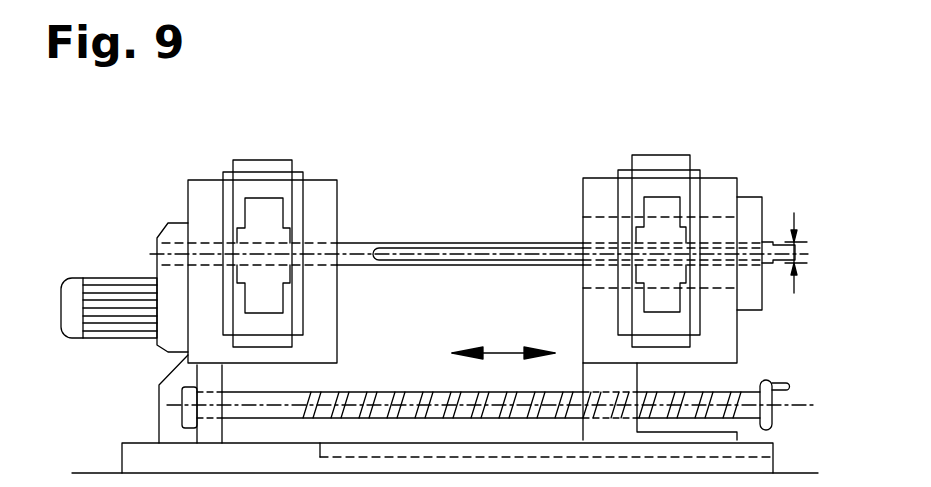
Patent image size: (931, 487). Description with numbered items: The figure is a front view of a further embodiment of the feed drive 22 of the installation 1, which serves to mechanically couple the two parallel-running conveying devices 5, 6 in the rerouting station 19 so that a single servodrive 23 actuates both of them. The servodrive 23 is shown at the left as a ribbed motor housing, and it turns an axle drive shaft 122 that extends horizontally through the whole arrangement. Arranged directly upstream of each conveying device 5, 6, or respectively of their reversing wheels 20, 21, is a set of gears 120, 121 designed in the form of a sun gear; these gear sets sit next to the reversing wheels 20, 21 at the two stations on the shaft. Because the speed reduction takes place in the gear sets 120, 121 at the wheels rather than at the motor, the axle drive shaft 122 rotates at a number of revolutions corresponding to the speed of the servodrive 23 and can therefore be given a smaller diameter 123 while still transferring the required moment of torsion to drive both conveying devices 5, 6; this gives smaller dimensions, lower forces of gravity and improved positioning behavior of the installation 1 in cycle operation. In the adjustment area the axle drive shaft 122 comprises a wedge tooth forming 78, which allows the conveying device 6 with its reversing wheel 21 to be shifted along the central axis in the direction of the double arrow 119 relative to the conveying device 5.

The installation 1 is at (560, 100).
The conveying device 5 is at (267, 136).
The conveying device 6 is at (675, 131).
The rerouting station 19 is at (777, 173).
The reversing wheel 20 is at (297, 208).
The reversing wheel 21 is at (695, 203).
The feed drive 22 is at (111, 266).
The servodrive 23 is at (107, 320).
The wedge tooth forming 78 is at (505, 243).
The double arrow 119 is at (503, 351).
The set of gears 120 is at (175, 237).
The set of gears 121 is at (750, 297).
The axle drive shaft 122 is at (362, 243).
The diameter 123 is at (797, 280).